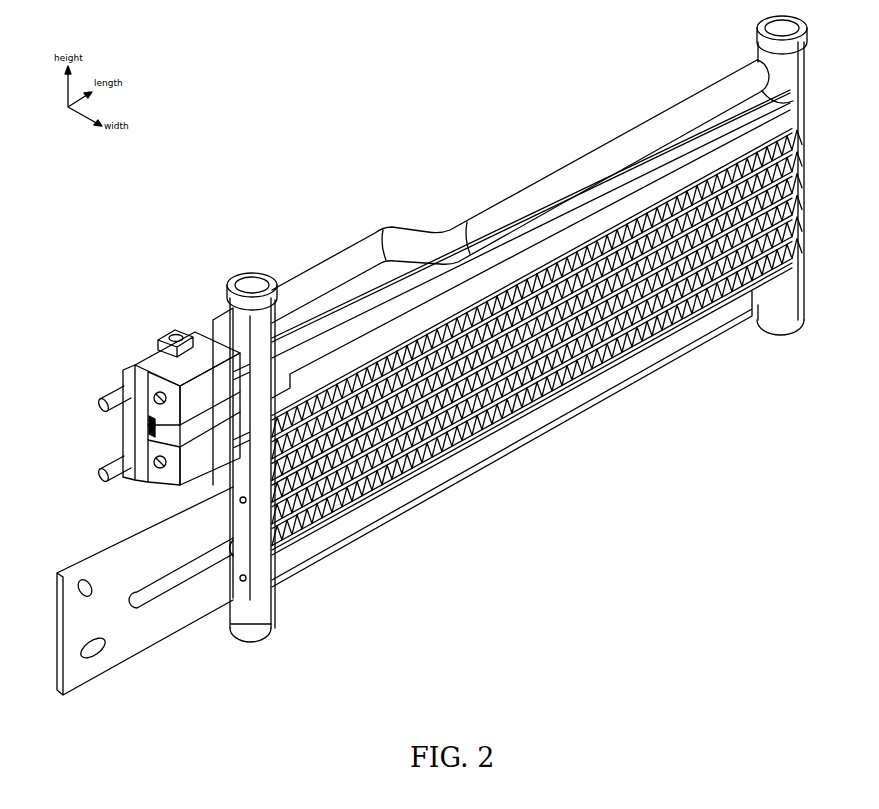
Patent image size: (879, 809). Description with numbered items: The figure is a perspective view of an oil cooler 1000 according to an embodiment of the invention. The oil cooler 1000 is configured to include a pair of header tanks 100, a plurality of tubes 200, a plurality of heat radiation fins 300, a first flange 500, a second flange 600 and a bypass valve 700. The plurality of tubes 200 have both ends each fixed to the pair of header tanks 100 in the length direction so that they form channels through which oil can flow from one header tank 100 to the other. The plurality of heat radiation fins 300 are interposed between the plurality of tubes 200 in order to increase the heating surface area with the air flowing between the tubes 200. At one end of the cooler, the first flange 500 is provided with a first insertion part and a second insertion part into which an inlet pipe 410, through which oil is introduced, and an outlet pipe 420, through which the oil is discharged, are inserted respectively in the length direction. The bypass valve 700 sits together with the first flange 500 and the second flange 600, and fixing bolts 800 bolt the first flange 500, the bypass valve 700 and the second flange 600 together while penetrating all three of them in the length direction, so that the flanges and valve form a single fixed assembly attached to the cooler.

The oil cooler 1000 is at (431, 153).
The header tanks 100 is at (261, 271).
The tubes 200 is at (447, 443).
The heat radiation fins 300 is at (514, 424).
The inlet pipe 410 is at (105, 398).
The outlet pipe 420 is at (105, 469).
The first flange 500 is at (126, 360).
The second flange 600 is at (214, 314).
The bypass valve 700 is at (170, 335).
The fixing bolts 800 is at (156, 466).